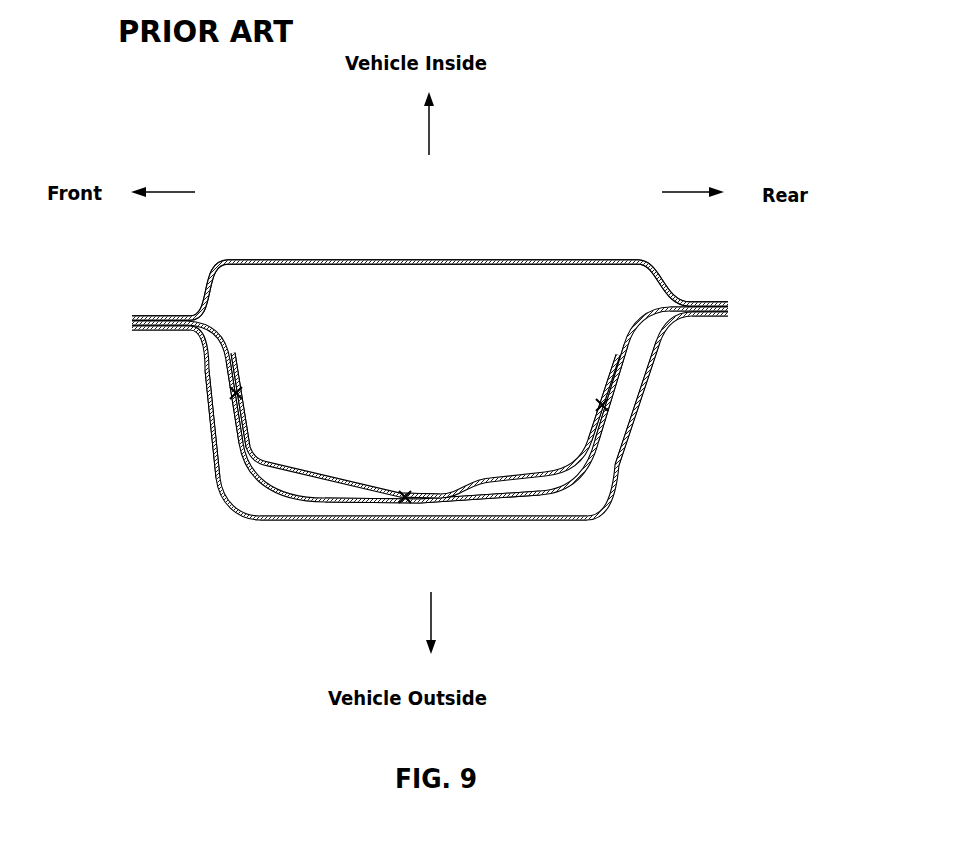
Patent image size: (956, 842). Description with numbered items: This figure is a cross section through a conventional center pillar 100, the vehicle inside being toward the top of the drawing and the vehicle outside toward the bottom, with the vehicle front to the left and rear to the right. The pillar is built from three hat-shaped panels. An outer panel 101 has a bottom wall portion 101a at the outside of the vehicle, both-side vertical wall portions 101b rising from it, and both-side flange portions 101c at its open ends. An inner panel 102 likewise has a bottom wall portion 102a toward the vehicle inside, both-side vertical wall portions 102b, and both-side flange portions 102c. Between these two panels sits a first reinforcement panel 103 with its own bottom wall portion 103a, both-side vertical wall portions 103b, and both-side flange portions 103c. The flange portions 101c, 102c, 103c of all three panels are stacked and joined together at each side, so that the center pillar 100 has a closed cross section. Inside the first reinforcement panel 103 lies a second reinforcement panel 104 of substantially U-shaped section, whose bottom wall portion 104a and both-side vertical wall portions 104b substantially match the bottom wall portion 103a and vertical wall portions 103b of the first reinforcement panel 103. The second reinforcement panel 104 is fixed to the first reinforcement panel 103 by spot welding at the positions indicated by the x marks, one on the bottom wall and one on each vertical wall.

The center pillar 100 is at (429, 401).
The outer panel 101 is at (302, 522).
The bottom wall portion 101a is at (358, 522).
The both-side vertical wall portions 101b is at (211, 465).
The both-side flange portions 101c is at (150, 332).
The inner panel 102 is at (477, 259).
The bottom wall portion 102a is at (360, 259).
The both-side vertical wall portions 102b is at (204, 283).
The both-side flange portions 102c is at (153, 315).
The first reinforcement panel 103 is at (601, 466).
The bottom wall portion 103a is at (547, 504).
The both-side vertical wall portions 103b is at (232, 418).
The both-side flange portions 103c is at (131, 322).
The second reinforcement panel 104 is at (308, 471).
The bottom wall portion 104a is at (430, 494).
The both-side vertical wall portions 104b is at (241, 374).